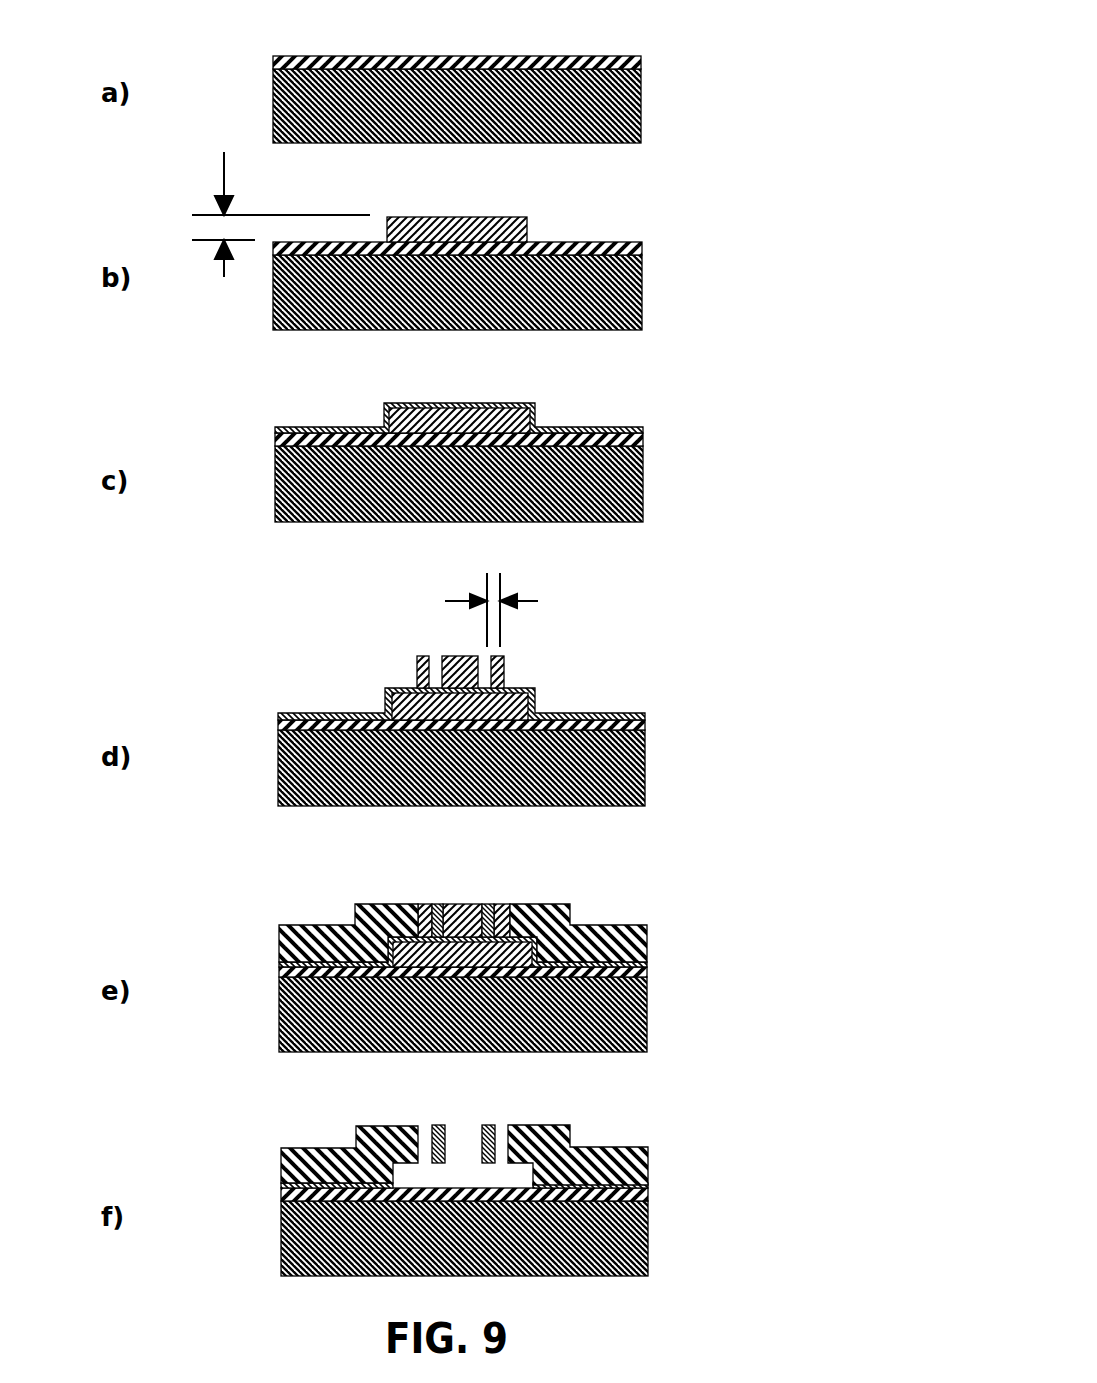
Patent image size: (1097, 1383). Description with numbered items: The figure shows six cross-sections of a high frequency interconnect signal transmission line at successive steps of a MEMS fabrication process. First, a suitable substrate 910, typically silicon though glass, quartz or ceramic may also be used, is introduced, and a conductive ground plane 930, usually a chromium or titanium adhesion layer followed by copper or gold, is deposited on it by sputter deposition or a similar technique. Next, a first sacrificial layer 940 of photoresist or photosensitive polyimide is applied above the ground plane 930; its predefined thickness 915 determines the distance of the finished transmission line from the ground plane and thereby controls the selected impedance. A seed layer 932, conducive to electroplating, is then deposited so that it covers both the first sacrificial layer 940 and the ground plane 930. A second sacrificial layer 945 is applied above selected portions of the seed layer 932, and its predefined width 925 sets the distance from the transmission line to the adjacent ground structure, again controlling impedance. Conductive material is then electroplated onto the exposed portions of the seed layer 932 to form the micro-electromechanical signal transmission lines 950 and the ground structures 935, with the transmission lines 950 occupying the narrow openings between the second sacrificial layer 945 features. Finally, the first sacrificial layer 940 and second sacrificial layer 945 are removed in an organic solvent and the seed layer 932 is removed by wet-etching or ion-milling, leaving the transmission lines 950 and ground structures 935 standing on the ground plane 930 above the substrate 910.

The substrate 910 is at (615, 113).
The conductive ground plane 930 is at (641, 61).
The seed layer 932 is at (275, 428).
The first sacrificial layer 940 is at (490, 224).
The second sacrificial layer 945 is at (492, 657).
The micro-electromechanical signal transmission lines 950 is at (438, 905).
The ground structures 935 is at (335, 932).
The thickness 915 is at (224, 177).
The width 925 is at (458, 600).